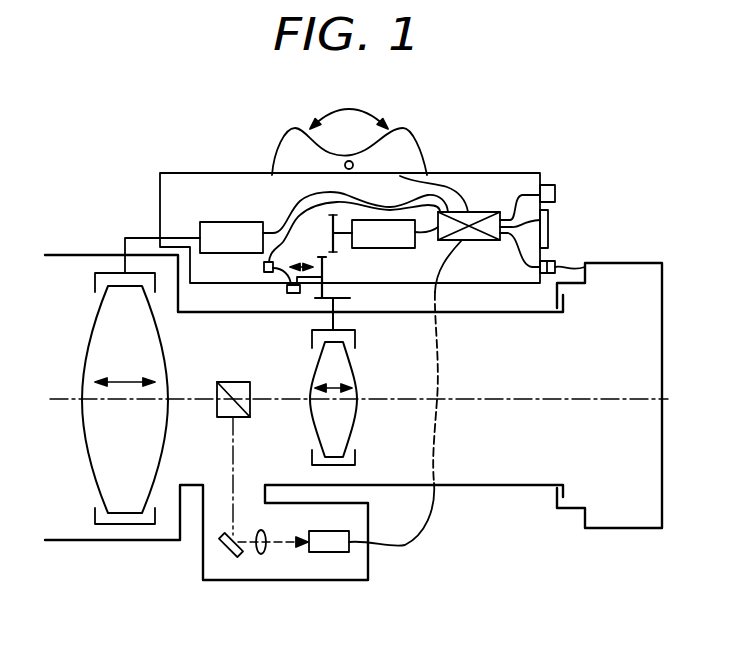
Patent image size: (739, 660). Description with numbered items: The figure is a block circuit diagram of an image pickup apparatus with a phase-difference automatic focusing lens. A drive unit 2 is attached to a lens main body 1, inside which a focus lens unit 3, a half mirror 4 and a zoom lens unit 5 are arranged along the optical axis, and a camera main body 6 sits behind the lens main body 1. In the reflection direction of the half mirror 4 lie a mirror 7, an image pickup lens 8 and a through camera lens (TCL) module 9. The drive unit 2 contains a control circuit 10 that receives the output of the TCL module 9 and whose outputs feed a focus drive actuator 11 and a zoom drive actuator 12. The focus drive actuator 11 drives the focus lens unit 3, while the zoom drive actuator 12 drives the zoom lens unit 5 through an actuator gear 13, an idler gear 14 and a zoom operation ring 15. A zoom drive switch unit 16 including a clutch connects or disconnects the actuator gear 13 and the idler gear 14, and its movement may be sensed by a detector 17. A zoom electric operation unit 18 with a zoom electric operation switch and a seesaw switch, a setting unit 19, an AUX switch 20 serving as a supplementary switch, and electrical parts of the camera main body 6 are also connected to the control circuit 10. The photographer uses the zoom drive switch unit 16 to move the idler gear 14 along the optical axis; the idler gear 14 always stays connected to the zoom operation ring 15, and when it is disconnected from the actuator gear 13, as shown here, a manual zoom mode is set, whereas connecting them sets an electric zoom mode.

The lens main body 1 is at (73, 262).
The drive unit 2 is at (171, 183).
The focus lens unit 3 is at (118, 293).
The half mirror 4 is at (222, 383).
The zoom lens unit 5 is at (343, 437).
The camera main body 6 is at (648, 265).
The mirror 7 is at (233, 556).
The image pickup lens 8 is at (262, 556).
The through camera lens (TCL) module 9 is at (340, 553).
The control circuit 10 is at (478, 212).
The focus drive actuator 11 is at (213, 222).
The zoom drive actuator 12 is at (409, 223).
The actuator gear 13 is at (332, 230).
The idler gear 14 is at (327, 268).
The zoom operation ring 15 is at (343, 300).
The zoom drive switch unit 16 is at (290, 295).
The detector 17 is at (264, 268).
The zoom electric operation unit 18 is at (288, 140).
The setting unit 19 is at (548, 213).
The AUX switch 20 is at (547, 185).